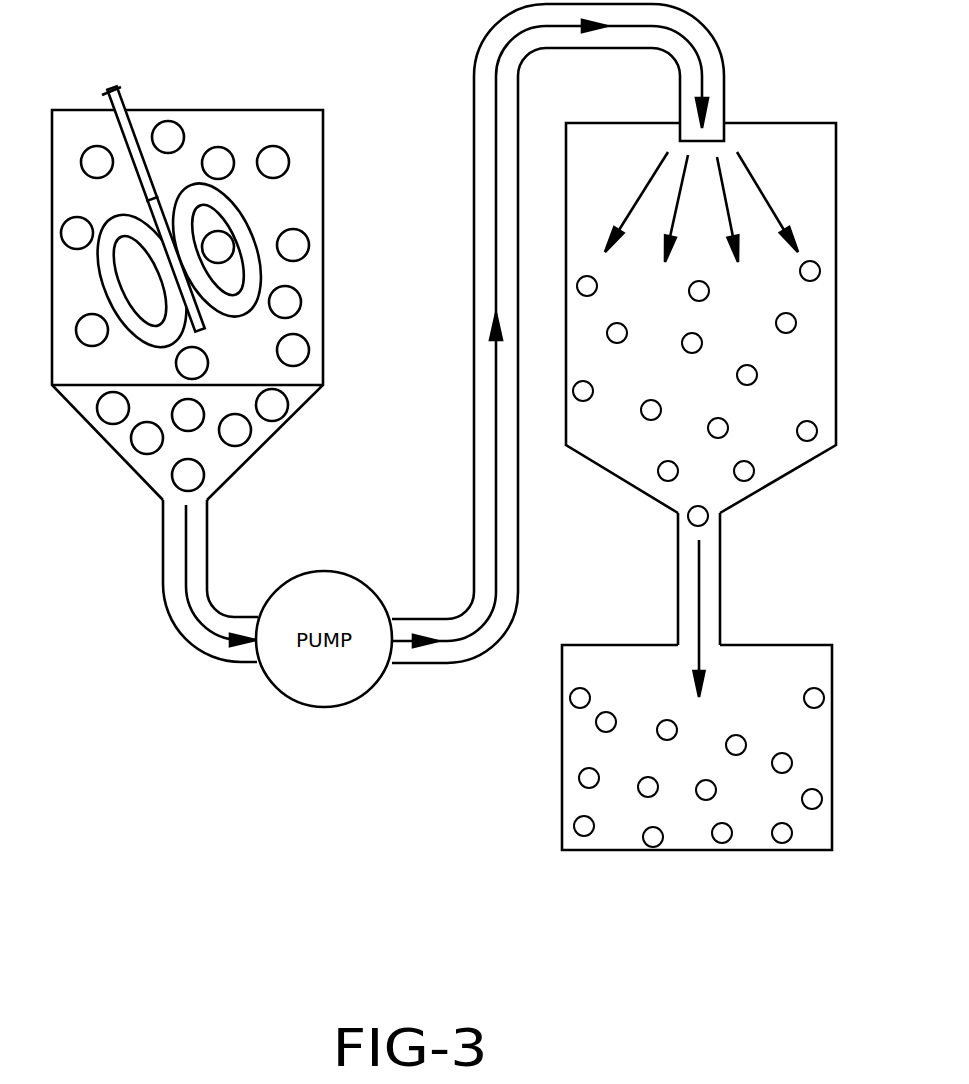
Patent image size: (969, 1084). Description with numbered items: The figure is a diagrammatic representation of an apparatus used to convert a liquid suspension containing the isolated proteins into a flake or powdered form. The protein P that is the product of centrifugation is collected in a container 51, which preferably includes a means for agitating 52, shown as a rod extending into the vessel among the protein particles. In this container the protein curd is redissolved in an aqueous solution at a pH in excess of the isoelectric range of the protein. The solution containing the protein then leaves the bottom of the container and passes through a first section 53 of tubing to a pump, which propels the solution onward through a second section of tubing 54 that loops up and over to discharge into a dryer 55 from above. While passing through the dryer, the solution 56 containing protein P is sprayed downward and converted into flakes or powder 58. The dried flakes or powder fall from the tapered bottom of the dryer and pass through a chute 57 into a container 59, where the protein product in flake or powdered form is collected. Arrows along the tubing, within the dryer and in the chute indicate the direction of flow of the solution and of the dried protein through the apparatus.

The container 51 is at (323, 367).
The means for agitating 52 is at (107, 88).
The first section of tubing 53 is at (163, 540).
The second section of tubing 54 is at (474, 296).
The dryer 55 is at (838, 237).
The solution 56 is at (797, 390).
The chute 57 is at (722, 617).
The flakes or powder 58 is at (587, 743).
The container 59 is at (622, 851).